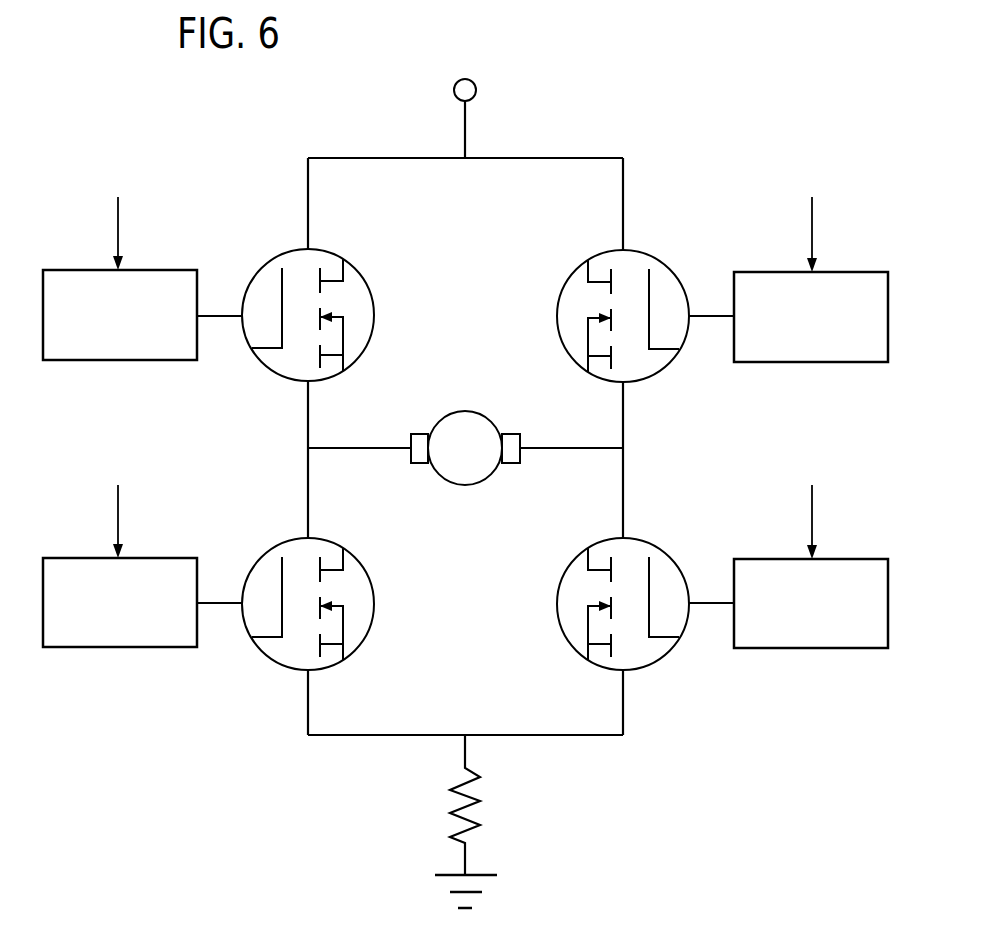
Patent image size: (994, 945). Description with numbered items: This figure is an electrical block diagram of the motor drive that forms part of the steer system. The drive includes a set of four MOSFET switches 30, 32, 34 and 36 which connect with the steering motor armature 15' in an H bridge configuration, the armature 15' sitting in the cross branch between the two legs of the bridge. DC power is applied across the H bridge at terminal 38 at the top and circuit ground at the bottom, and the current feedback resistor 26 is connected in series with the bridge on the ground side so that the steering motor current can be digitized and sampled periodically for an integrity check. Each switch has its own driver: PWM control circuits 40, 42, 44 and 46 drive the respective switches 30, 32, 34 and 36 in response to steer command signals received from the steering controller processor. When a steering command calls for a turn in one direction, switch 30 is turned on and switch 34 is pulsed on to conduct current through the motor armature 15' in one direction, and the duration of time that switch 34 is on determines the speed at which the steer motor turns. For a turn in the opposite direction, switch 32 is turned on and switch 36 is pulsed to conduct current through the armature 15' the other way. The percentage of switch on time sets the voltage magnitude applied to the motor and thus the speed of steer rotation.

The terminal 38 is at (476, 90).
The MOSFET switch 30 is at (362, 275).
The MOSFET switch 32 is at (569, 276).
The MOSFET switch 34 is at (571, 565).
The MOSFET switch 36 is at (360, 562).
The steering motor armature 15' is at (465, 428).
The PWM control circuit 40 is at (182, 270).
The PWM control circuit 42 is at (755, 272).
The PWM control circuit 44 is at (760, 648).
The PWM control circuit 46 is at (122, 647).
The current feedback resistor 26 is at (478, 800).